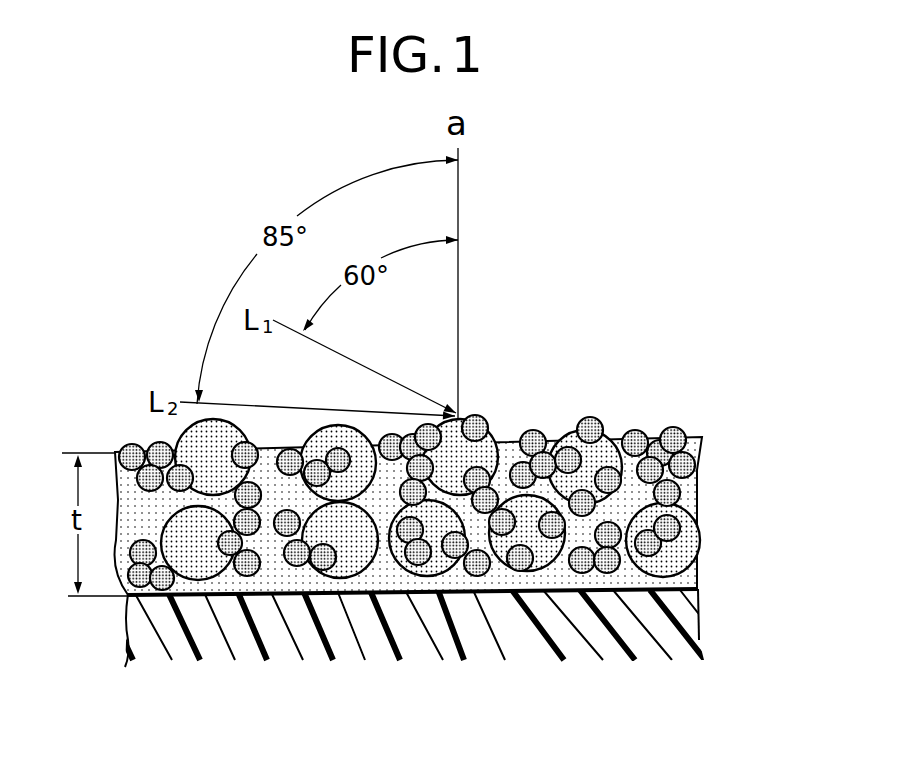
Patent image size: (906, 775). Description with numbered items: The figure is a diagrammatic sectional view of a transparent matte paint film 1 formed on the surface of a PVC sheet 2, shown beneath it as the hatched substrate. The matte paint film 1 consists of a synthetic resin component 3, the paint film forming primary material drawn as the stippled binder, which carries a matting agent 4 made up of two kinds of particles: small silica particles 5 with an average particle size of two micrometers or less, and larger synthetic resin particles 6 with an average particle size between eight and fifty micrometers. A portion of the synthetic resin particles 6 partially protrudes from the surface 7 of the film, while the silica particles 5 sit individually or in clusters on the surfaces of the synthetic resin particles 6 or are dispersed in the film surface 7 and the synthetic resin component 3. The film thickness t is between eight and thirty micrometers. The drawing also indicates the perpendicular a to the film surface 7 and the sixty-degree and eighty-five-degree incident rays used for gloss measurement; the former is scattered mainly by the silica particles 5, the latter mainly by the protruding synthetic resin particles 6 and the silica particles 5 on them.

The matte paint film 1 is at (713, 433).
The PVC sheet 2 is at (260, 640).
The synthetic resin component 3 is at (505, 457).
The matting agent 4 is at (736, 467).
The silica particles 5 is at (688, 468).
The synthetic resin particles 6 is at (680, 548).
The surface of the matte paint film 7 is at (616, 440).